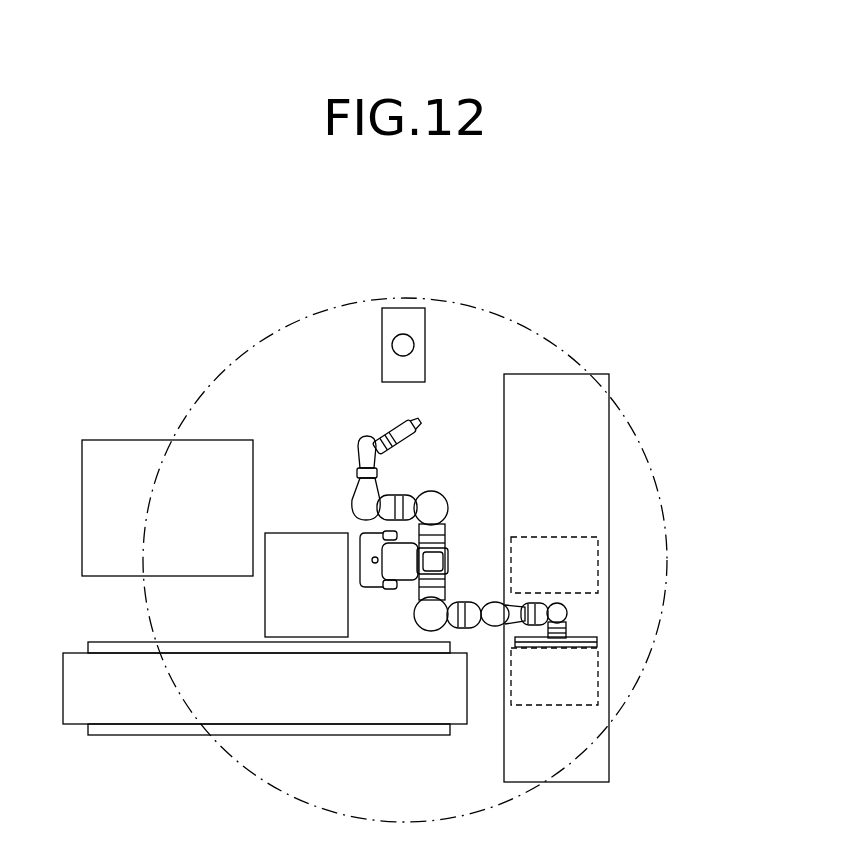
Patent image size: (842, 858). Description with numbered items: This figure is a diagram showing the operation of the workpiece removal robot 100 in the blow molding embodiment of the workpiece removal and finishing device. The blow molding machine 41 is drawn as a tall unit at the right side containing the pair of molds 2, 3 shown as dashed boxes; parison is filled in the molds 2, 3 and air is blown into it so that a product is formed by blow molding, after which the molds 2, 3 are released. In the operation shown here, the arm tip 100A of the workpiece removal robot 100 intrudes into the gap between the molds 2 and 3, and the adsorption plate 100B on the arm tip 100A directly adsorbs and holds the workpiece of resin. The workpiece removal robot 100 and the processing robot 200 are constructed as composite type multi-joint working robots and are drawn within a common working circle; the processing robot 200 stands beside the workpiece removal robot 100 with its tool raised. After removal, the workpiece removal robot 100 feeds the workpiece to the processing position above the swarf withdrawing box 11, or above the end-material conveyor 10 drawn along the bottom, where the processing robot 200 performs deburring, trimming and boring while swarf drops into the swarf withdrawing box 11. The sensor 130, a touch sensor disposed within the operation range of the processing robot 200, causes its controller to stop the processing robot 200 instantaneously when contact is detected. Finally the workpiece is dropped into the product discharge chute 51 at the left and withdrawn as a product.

The end-material conveyor 10 is at (123, 712).
The swarf withdrawing box 11 is at (277, 607).
The product discharge chute 51 is at (122, 453).
The sensor 130 is at (403, 318).
The processing robot 200 is at (343, 468).
The blow molding machine 41 is at (616, 455).
The mold 2 is at (598, 562).
The mold 3 is at (588, 677).
The workpiece removal robot 100 is at (457, 632).
The arm tip 100A is at (568, 628).
The adsorption plate 100B is at (597, 628).